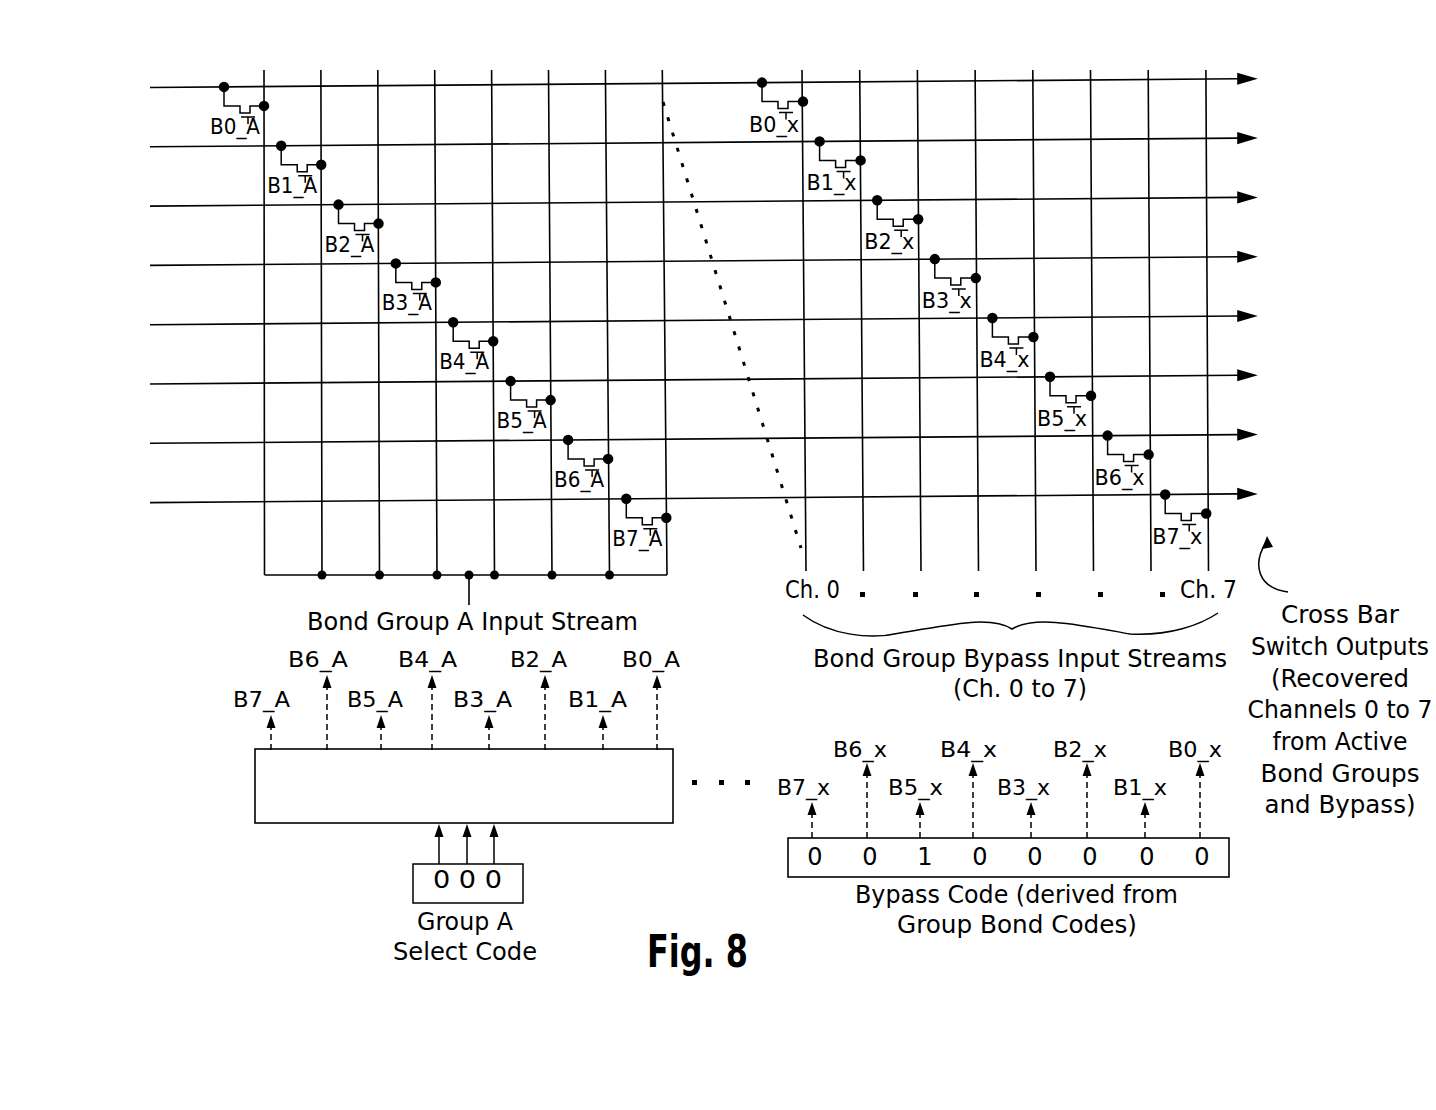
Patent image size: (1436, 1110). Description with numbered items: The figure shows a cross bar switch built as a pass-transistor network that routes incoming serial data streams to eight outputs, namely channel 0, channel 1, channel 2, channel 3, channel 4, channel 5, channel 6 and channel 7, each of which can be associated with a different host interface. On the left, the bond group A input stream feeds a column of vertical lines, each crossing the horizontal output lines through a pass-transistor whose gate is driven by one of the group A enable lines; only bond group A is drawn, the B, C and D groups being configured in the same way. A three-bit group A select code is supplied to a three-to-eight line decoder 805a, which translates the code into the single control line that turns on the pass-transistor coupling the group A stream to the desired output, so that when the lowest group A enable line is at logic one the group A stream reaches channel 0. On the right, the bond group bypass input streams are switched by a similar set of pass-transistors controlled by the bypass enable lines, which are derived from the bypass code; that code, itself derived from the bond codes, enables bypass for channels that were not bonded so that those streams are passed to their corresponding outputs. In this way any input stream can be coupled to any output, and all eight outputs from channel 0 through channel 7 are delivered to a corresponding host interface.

The 3-to-8 line decoder 805a is at (464, 786).
The channel 0 output 0 is at (749, 94).
The channel 1 output 1 is at (749, 153).
The channel 2 output 2 is at (749, 212).
The channel 3 output 3 is at (749, 272).
The channel 4 output 4 is at (749, 331).
The channel 5 output 5 is at (749, 390).
The channel 6 output 6 is at (749, 450).
The channel 7 output 7 is at (749, 509).